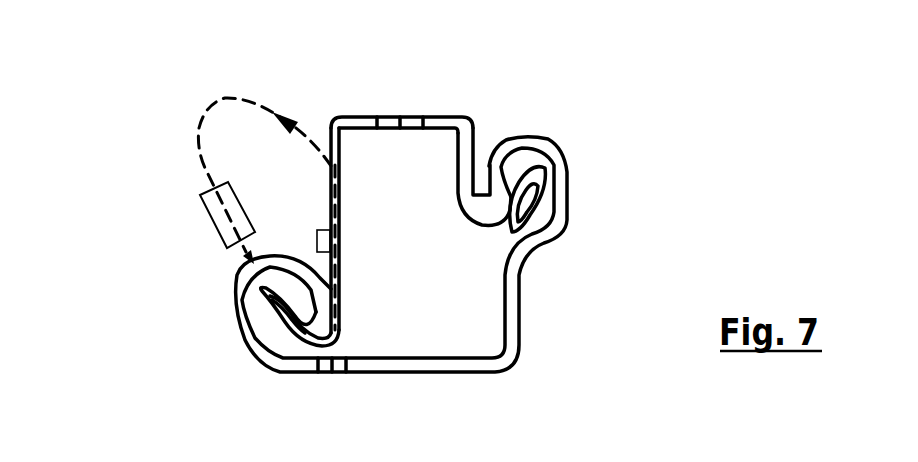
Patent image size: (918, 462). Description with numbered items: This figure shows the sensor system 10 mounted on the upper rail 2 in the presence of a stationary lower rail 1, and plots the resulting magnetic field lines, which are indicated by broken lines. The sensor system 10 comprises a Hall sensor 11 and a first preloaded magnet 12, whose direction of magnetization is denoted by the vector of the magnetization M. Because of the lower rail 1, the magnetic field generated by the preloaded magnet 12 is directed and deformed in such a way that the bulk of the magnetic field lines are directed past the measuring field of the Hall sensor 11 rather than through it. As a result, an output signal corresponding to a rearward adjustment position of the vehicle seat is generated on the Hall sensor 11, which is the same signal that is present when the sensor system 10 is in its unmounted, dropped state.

The lower rail 1 is at (415, 373).
The upper rail 2 is at (341, 116).
The sensor system 10 is at (162, 125).
The Hall sensor 11 is at (323, 241).
The first preloaded magnet 12 is at (217, 228).
The vector of the magnetization M is at (207, 187).